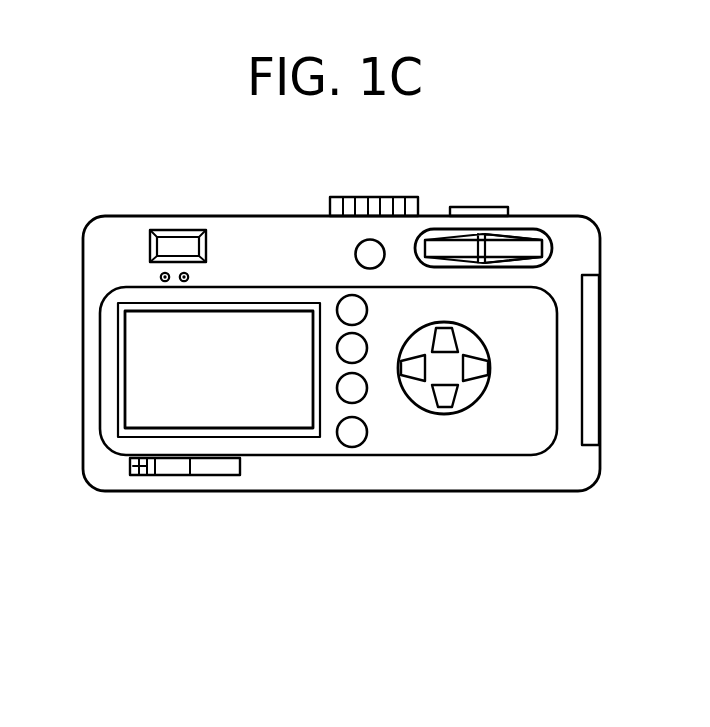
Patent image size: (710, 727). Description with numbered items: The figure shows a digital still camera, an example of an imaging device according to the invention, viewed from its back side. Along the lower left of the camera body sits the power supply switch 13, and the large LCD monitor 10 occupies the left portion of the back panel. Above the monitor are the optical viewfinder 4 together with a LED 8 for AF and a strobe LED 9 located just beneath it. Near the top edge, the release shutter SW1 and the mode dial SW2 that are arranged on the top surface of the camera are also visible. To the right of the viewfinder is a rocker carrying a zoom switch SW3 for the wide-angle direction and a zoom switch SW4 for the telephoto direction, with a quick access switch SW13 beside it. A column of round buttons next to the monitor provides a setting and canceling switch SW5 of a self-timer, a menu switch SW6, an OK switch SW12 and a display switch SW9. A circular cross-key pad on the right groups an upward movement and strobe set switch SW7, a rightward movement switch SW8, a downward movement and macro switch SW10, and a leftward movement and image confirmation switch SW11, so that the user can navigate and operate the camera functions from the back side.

The optical viewfinder 4 is at (177, 240).
The LED for AF 8 is at (158, 277).
The strobe LED 9 is at (193, 277).
The LCD monitor 10 is at (137, 386).
The power supply switch 13 is at (130, 470).
The release shutter SW1 is at (492, 212).
The mode dial SW2 is at (355, 197).
The zoom switch for wide-angle direction SW3 is at (438, 247).
The zoom switch for telephoto direction SW4 is at (530, 249).
The setting and canceling switch of a self-timer SW5 is at (338, 312).
The menu switch SW6 is at (338, 350).
The upward movement and strobe set switch SW7 is at (450, 342).
The rightward movement switch SW8 is at (480, 372).
The display switch SW9 is at (351, 434).
The downward movement and macro switch SW10 is at (445, 395).
The leftward movement and image confirmation switch SW11 is at (412, 370).
The OK switch SW12 is at (338, 389).
The quick access switch SW13 is at (363, 256).